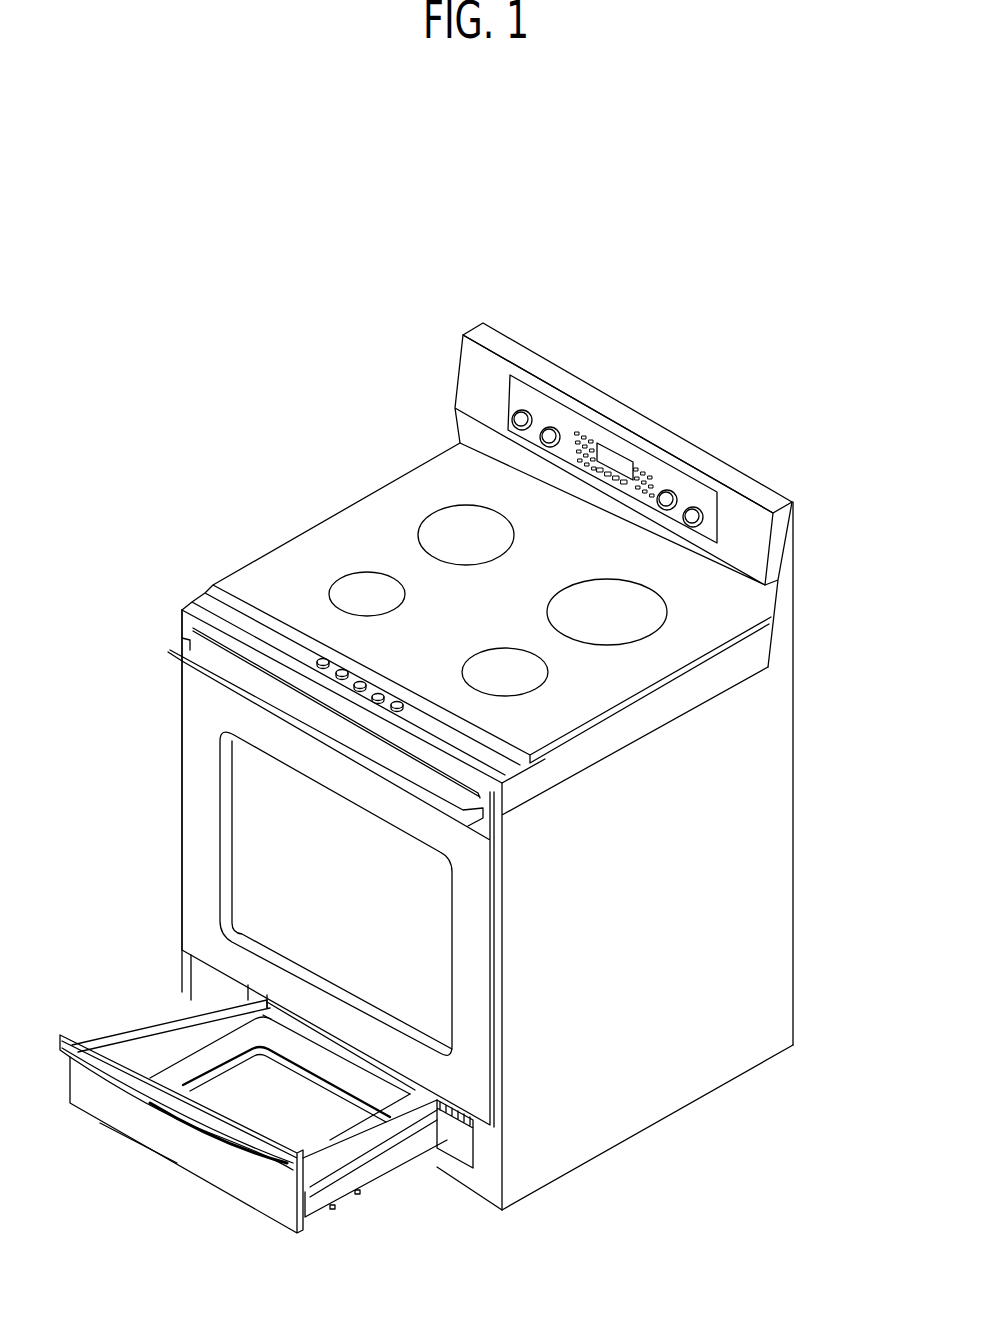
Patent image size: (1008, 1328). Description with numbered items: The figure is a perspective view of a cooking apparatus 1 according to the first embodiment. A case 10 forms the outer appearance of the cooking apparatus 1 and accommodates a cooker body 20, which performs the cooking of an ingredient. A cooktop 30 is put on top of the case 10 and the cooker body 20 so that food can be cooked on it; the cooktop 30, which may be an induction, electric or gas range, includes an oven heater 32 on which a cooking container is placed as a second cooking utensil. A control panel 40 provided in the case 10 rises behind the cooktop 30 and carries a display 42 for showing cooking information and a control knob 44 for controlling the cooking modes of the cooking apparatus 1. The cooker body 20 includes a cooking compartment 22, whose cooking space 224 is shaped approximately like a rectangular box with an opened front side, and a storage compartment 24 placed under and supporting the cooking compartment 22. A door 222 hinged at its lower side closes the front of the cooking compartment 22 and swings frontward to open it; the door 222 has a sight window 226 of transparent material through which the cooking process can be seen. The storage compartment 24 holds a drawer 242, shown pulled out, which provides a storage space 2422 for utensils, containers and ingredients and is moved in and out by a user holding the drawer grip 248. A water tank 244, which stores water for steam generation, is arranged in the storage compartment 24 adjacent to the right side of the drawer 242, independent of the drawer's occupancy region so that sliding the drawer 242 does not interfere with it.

The cooking apparatus 1 is at (238, 347).
The case 10 is at (794, 826).
The cooker body 20 is at (73, 888).
The cooking compartment 22 is at (180, 883).
The door 222 is at (190, 730).
The cooking space 224 is at (252, 832).
The sight window 226 is at (248, 778).
The storage compartment 24 is at (157, 1013).
The drawer 242 is at (242, 1190).
The storage space 2422 is at (349, 1113).
The water tank 244 is at (453, 1133).
The drawer grip 248 is at (137, 1097).
The cooktop 30 is at (327, 524).
The oven heater 32 is at (437, 520).
The control panel 40 is at (554, 405).
The display 42 is at (617, 457).
The control knob 44 is at (665, 493).